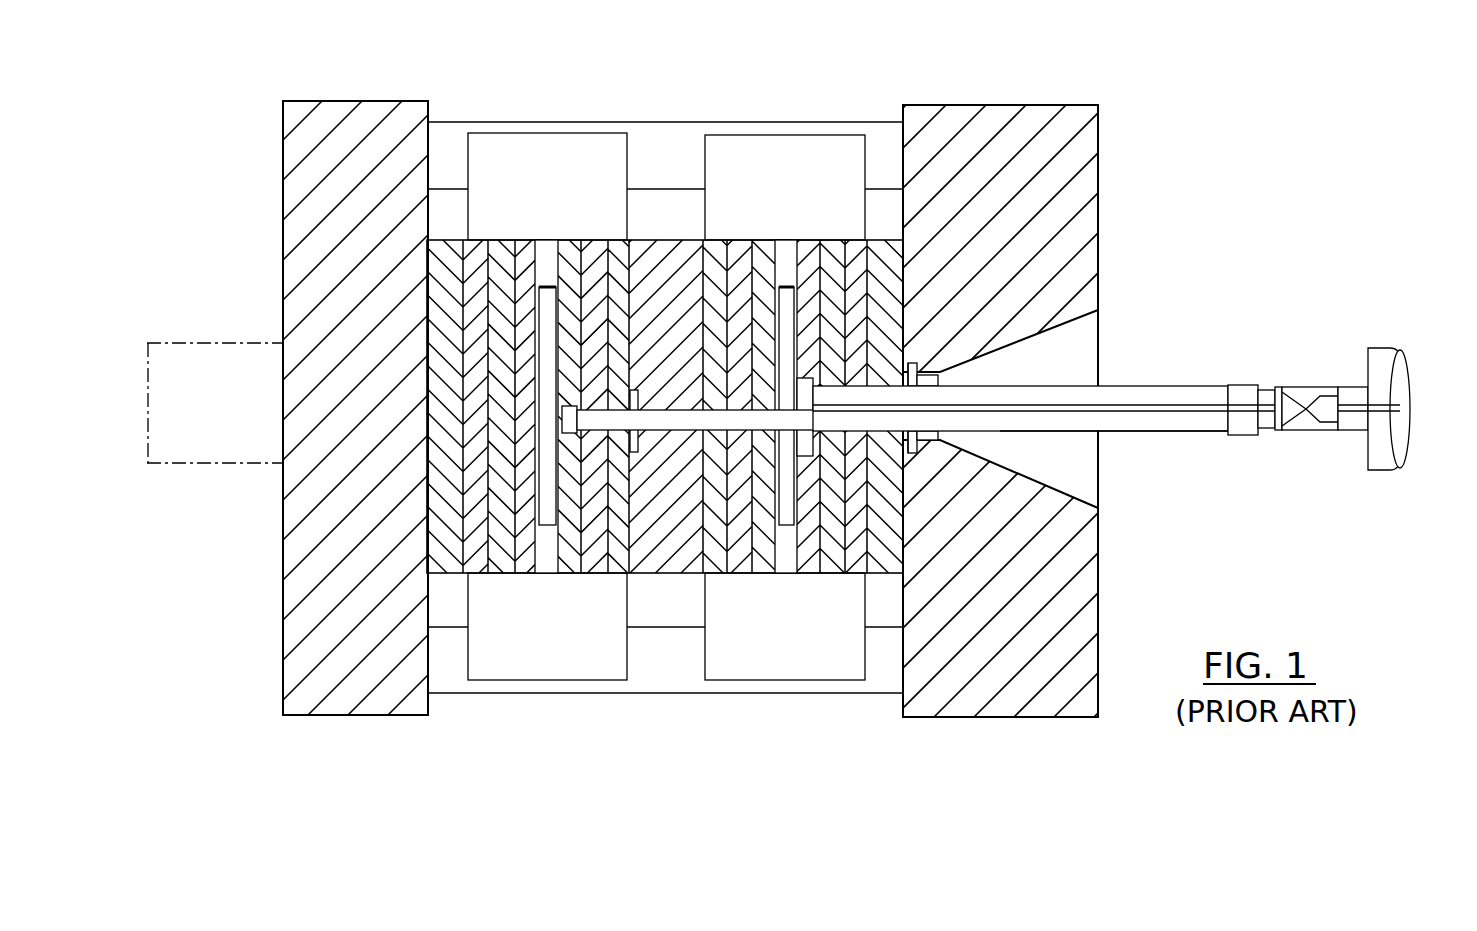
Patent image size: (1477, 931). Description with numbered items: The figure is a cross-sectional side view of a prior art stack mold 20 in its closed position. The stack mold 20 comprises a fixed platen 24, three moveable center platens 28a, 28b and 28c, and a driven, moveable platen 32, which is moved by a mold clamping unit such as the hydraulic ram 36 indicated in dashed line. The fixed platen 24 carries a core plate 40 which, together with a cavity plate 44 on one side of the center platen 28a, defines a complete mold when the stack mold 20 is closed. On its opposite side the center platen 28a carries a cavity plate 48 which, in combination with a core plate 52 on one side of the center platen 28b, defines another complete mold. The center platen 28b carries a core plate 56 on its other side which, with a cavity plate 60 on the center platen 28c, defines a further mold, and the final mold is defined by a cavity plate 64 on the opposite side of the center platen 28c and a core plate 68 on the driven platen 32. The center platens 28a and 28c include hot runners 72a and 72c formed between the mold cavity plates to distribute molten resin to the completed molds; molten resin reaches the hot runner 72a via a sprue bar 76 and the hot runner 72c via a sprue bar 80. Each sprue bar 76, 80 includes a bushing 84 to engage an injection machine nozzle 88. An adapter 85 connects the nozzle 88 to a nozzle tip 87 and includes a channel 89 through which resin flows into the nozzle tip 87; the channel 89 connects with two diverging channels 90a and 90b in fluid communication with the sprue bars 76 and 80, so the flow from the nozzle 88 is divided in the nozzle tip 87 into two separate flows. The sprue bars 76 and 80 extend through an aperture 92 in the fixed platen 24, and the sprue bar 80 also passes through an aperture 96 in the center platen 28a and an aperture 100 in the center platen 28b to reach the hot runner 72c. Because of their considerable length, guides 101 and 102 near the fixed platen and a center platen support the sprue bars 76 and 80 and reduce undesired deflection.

The stack mold 20 is at (1003, 63).
The fixed platen 24 is at (1088, 218).
The center platen 28a is at (785, 155).
The center platen 28b is at (680, 270).
The center platen 28c is at (540, 155).
The driven platen 32 is at (362, 717).
The hydraulic ram 36 is at (233, 415).
The core plate 40 is at (853, 573).
The cavity plate 44 is at (832, 573).
The cavity plate 48 is at (737, 573).
The core plate 52 is at (705, 577).
The core plate 56 is at (608, 573).
The cavity plate 60 is at (590, 268).
The cavity plate 64 is at (498, 263).
The core plate 68 is at (475, 263).
The hot runner 72a is at (790, 305).
The hot runner 72c is at (548, 310).
The sprue bar 76 is at (1110, 395).
The sprue bar 80 is at (1140, 432).
The bushing 84 is at (1235, 385).
The adapter 85 is at (1325, 434).
The nozzle tip 87 is at (1285, 390).
The injection machine nozzle 88 is at (1345, 362).
The channel 89 is at (1385, 410).
The diverging channel 90a is at (1295, 395).
The diverging channel 90b is at (1290, 428).
The aperture 92 is at (920, 378).
The aperture 96 is at (760, 573).
The aperture 100 is at (645, 440).
The guide 101 is at (918, 363).
The guide 102 is at (633, 360).